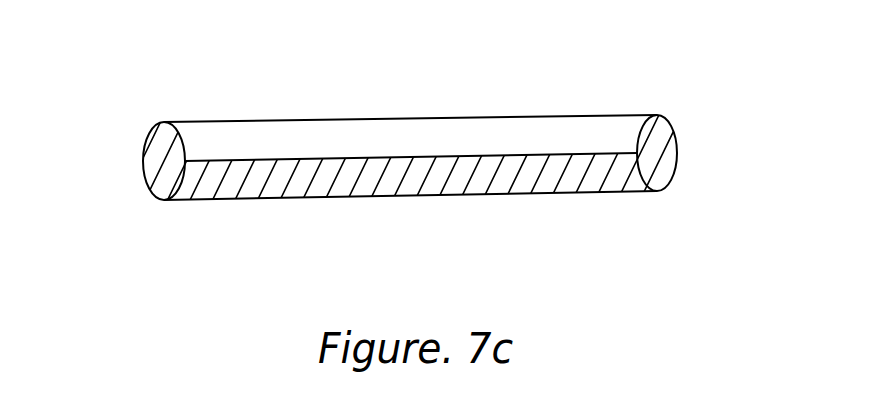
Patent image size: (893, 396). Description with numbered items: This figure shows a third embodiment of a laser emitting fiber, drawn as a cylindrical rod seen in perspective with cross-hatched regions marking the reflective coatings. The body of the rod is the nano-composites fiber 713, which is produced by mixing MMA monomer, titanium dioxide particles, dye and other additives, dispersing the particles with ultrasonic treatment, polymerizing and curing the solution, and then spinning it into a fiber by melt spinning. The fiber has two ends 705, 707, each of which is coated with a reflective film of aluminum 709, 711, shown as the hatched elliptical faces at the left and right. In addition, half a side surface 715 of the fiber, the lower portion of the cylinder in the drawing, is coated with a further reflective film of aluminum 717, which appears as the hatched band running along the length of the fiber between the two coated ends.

The end 705 is at (143, 84).
The end 707 is at (673, 88).
The reflective film of aluminum 709 is at (158, 173).
The reflective film of aluminum 711 is at (662, 157).
The nano-composites fiber 713 is at (395, 118).
The half side surface 715 is at (343, 233).
The reflective film of aluminum 717 is at (562, 195).